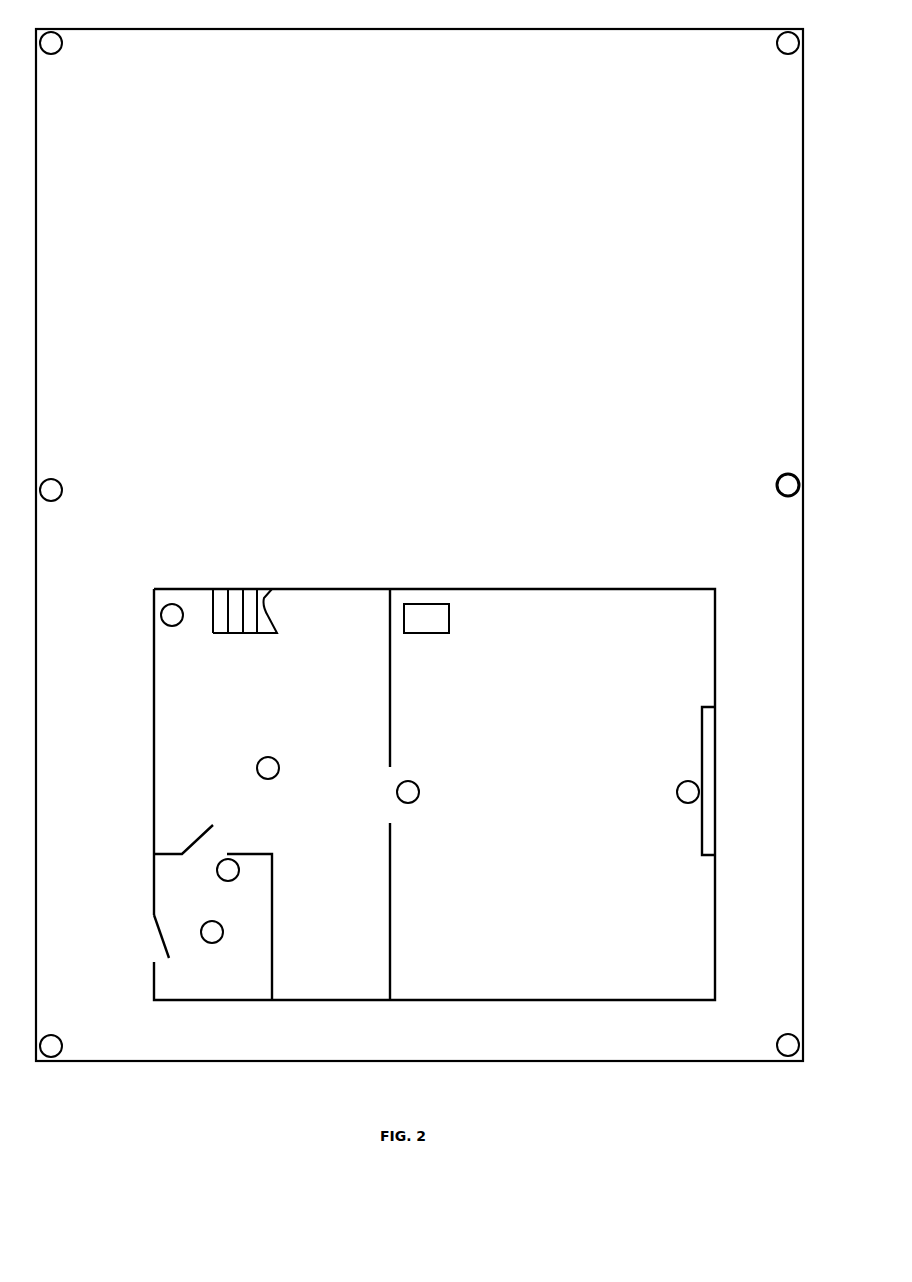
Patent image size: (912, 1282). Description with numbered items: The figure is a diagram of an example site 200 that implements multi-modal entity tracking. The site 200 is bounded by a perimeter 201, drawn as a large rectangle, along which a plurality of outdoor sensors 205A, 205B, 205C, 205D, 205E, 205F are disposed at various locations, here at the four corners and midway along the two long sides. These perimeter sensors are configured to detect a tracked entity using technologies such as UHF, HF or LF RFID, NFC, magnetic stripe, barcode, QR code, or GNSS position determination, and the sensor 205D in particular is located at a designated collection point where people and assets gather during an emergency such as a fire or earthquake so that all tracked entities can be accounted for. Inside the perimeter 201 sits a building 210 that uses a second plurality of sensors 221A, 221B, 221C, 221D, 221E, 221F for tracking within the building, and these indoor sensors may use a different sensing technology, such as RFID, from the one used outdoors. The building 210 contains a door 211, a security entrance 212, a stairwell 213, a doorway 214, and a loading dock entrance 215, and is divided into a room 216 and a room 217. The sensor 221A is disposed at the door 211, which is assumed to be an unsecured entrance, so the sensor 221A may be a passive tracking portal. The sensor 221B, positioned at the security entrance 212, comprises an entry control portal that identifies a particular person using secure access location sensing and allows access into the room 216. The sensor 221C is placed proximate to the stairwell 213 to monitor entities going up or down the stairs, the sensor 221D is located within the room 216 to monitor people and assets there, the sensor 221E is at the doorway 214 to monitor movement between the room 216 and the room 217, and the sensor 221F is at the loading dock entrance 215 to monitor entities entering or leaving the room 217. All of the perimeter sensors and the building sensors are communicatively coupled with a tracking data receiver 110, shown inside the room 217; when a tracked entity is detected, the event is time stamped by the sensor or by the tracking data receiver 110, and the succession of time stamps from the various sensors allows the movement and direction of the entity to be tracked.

The site 200 is at (419, 557).
The perimeter 201 is at (110, 1061).
The sensor 205A is at (58, 1036).
The sensor 205B is at (788, 1034).
The sensor 205C is at (58, 481).
The sensor 205D is at (776, 485).
The sensor 205E is at (58, 51).
The sensor 205F is at (788, 55).
The building 210 is at (580, 589).
The door 211 is at (153, 935).
The security entrance 212 is at (213, 853).
The stairwell 213 is at (222, 605).
The doorway 214 is at (378, 770).
The loading dock entrance 215 is at (707, 722).
The room 216 is at (347, 794).
The room 217 is at (538, 950).
The tracking data receiver 110 is at (420, 633).
The sensor 221A is at (223, 930).
The sensor 221B is at (228, 881).
The sensor 221C is at (172, 626).
The sensor 221D is at (258, 763).
The sensor 221E is at (418, 785).
The sensor 221F is at (677, 792).